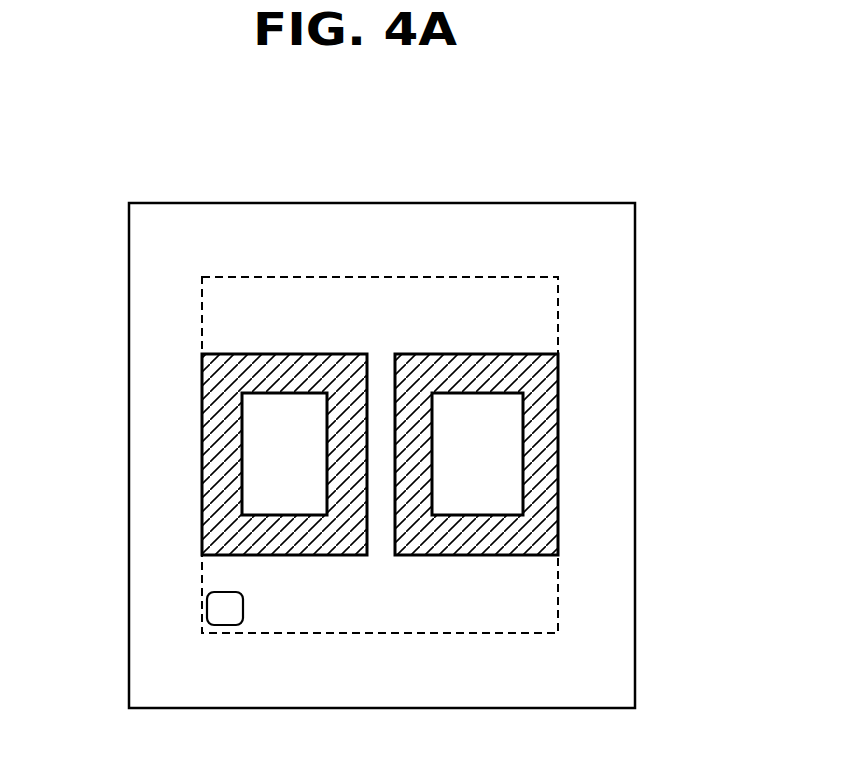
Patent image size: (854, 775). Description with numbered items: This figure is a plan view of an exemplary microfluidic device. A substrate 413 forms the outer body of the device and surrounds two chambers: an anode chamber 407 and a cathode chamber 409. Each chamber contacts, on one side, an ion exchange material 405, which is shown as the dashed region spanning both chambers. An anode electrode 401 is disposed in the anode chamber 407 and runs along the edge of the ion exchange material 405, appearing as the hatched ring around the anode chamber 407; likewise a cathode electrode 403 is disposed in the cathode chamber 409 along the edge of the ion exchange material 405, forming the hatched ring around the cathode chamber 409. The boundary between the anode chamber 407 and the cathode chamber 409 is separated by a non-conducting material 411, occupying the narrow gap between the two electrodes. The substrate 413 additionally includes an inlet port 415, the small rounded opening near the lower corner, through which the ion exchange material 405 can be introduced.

The anode electrode 401 is at (313, 365).
The cathode electrode 403 is at (458, 365).
The ion exchange material 405 is at (537, 600).
The anode chamber 407 is at (258, 402).
The cathode chamber 409 is at (505, 405).
The non-conducting material 411 is at (384, 375).
The substrate 413 is at (603, 347).
The inlet port 415 is at (210, 607).